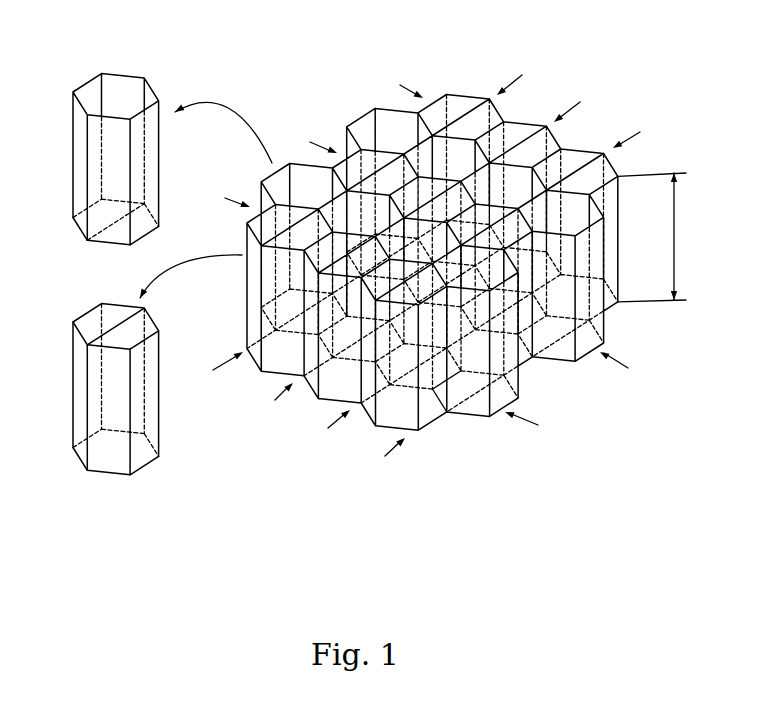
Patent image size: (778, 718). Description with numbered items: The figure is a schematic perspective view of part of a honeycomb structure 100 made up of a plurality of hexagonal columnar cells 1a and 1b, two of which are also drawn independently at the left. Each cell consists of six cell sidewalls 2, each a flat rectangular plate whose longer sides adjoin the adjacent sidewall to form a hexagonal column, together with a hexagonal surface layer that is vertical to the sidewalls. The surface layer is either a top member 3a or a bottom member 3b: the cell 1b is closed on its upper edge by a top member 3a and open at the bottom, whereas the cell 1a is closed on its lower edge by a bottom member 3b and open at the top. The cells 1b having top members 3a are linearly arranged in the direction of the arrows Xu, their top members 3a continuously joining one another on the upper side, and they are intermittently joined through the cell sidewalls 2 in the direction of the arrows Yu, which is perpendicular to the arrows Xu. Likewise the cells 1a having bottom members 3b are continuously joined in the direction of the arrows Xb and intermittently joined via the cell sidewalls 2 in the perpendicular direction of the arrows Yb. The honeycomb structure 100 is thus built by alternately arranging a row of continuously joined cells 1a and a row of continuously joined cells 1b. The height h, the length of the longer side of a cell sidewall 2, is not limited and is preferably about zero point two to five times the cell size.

The honeycomb structure 100 is at (452, 86).
The cell 1a is at (342, 248).
The cell 1b is at (340, 282).
The cell sidewall 2 is at (82, 167).
The top member 3a is at (115, 310).
The bottom member 3b is at (83, 228).
The height h is at (653, 237).
The arrows Xu is at (311, 139).
The arrows Yu is at (576, 104).
The arrows Xb is at (578, 395).
The arrows Yb is at (297, 412).